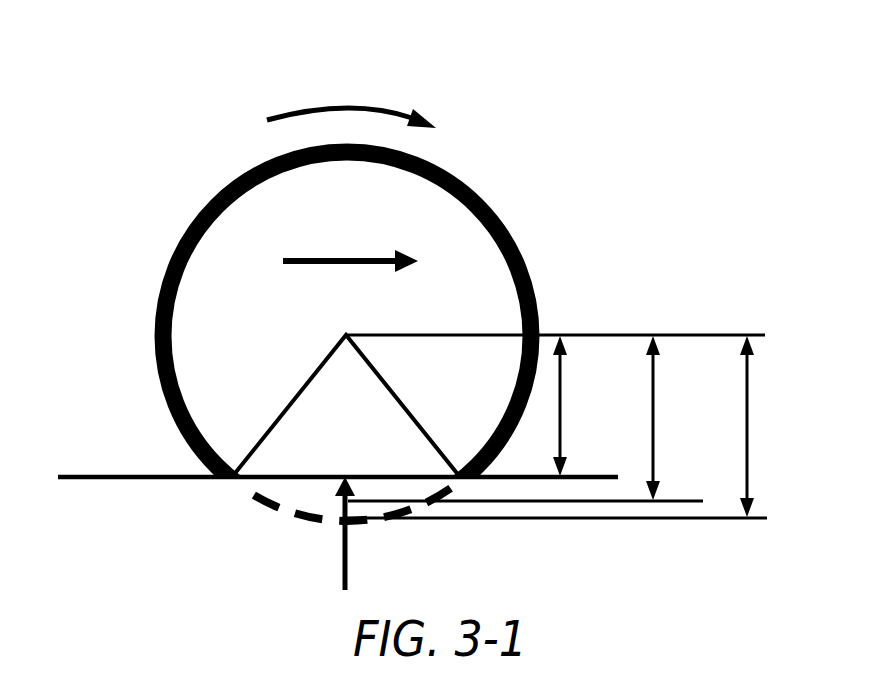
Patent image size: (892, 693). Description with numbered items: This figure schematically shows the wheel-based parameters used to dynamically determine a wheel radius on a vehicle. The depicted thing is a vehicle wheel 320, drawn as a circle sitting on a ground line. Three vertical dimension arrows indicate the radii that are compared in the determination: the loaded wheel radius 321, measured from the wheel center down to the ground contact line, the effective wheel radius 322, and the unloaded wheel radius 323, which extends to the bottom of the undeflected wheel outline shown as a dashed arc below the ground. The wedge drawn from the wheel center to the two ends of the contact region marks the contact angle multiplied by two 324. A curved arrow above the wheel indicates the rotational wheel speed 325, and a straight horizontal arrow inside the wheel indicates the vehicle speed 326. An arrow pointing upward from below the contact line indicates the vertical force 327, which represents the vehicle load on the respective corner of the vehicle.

The vehicle wheel 320 is at (160, 200).
The loaded wheel radius 321 is at (562, 398).
The effective wheel radius 322 is at (655, 408).
The unloaded wheel radius 323 is at (749, 440).
The contact angle 2β 324 is at (400, 412).
The rotational wheel speed 325 is at (345, 108).
The vehicle speed 326 is at (367, 250).
The vertical force 327 is at (348, 548).